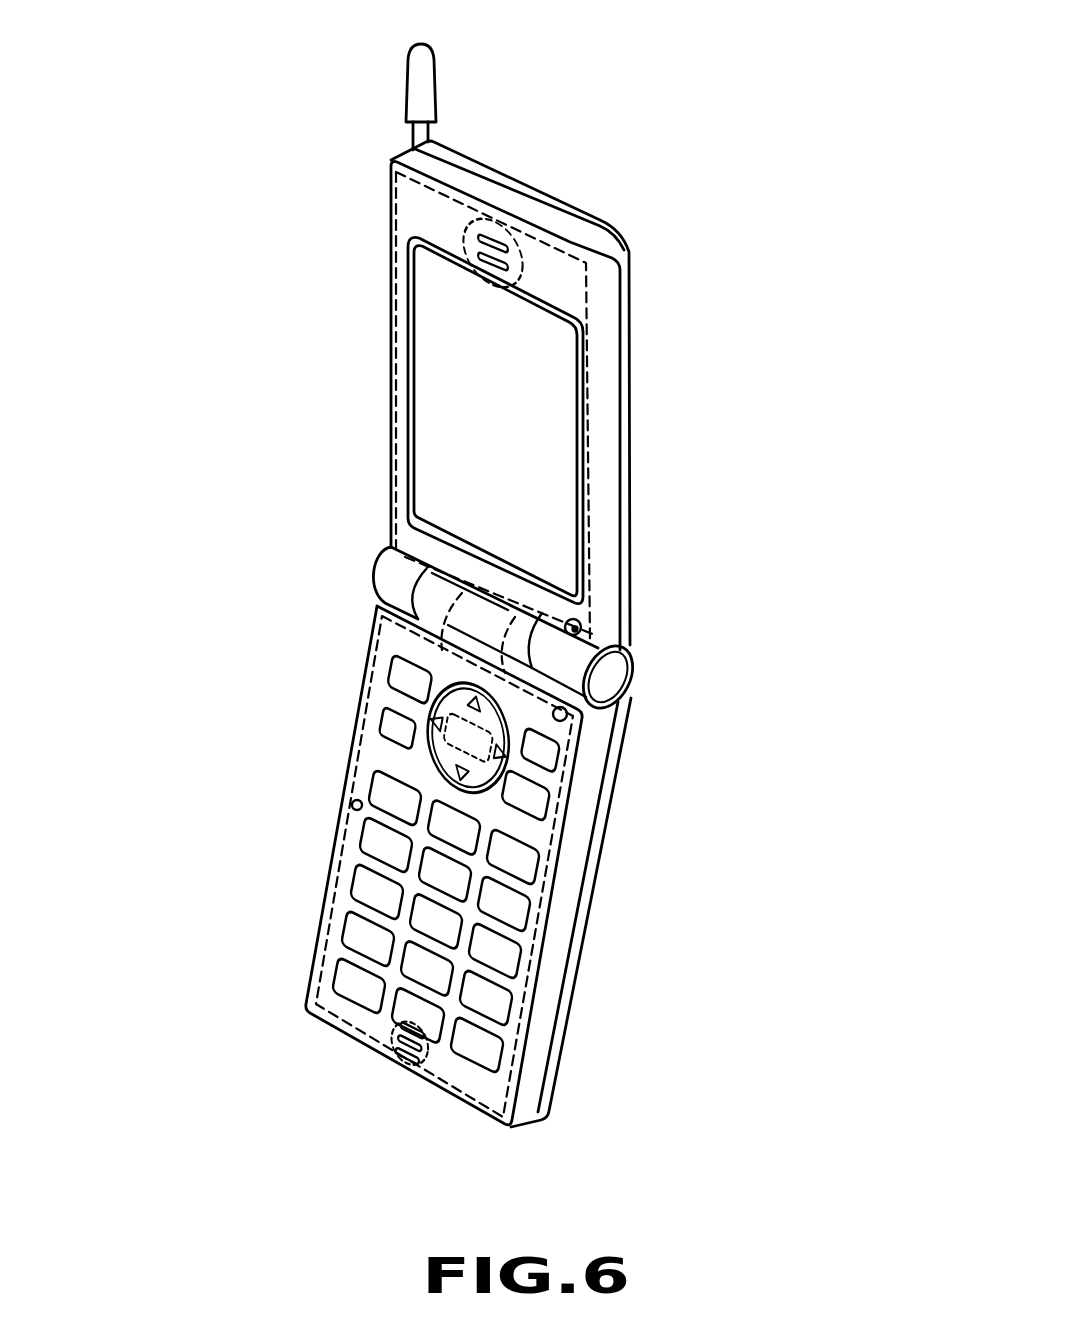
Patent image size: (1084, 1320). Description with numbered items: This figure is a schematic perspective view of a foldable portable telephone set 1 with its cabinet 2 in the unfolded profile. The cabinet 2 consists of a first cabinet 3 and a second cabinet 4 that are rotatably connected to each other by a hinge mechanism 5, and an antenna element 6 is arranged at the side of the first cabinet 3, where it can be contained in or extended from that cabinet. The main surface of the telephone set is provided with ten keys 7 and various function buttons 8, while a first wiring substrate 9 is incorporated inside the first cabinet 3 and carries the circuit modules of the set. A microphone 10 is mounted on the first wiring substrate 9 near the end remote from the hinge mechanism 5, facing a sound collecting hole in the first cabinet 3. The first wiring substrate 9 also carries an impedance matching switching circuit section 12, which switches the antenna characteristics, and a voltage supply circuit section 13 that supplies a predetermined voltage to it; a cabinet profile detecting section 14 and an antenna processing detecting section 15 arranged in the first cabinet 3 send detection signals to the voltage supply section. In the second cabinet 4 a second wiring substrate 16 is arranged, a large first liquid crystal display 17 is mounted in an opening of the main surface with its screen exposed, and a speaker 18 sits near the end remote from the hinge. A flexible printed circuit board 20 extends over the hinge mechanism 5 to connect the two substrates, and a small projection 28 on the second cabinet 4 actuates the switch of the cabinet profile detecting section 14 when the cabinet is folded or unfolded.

The portable telephone set 1 is at (603, 23).
The cabinet 2 is at (748, 605).
The first cabinet 3 is at (600, 733).
The second cabinet 4 is at (613, 610).
The hinge mechanism 5 is at (392, 573).
The antenna element 6 is at (408, 84).
The ten keys 7 is at (357, 897).
The function buttons 8 is at (508, 771).
The first wiring substrate 9 is at (548, 905).
The microphone 10 is at (421, 1068).
The impedance matching switching circuit section 12 is at (388, 686).
The voltage supply circuit section 13 is at (556, 768).
The cabinet profile detecting section 14 is at (507, 740).
The antenna processing detecting section 15 is at (350, 806).
The second wiring substrate 16 is at (593, 440).
The first liquid crystal display 17 is at (540, 393).
The speaker 18 is at (483, 212).
The flexible printed circuit board 20 is at (377, 610).
The projection 28 is at (580, 619).